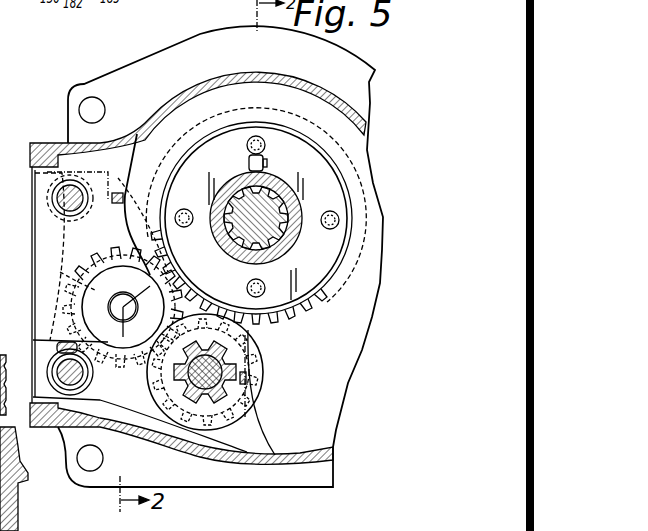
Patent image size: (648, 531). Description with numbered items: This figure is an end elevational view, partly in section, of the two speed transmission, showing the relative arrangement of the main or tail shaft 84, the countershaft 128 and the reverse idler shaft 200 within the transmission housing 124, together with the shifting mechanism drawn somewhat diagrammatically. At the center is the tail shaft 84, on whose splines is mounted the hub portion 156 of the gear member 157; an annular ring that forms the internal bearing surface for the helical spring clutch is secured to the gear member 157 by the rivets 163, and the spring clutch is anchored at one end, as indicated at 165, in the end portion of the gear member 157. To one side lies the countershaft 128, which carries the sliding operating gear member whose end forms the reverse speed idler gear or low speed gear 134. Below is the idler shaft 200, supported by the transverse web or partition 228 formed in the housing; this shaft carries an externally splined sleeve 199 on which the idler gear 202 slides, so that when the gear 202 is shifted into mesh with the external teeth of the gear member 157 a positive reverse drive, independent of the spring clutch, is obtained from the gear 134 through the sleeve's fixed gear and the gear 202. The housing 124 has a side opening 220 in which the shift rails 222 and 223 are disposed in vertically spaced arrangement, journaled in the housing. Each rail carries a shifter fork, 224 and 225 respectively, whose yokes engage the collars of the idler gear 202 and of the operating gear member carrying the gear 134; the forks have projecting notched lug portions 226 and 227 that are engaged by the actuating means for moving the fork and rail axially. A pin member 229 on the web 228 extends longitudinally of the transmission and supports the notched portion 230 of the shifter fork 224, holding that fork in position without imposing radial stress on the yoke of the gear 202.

The tail shaft 84 is at (222, 205).
The transmission housing 124 is at (190, 89).
The countershaft 128 is at (115, 305).
The reverse speed idler gear or low speed gear 134 is at (60, 272).
The hub portion 156 is at (245, 262).
The gear member 157 is at (269, 303).
The rivets 163 is at (247, 146).
The spring clutch anchor 165 is at (268, 162).
The externally splined sleeve 199 is at (247, 380).
The idler shaft 200 is at (222, 394).
The idler gear 202 is at (240, 362).
The side opening 220 is at (36, 170).
The shift rail 222 is at (58, 202).
The shift rail 223 is at (58, 368).
The shifter fork 224 is at (60, 242).
The shifter fork 225 is at (137, 403).
The notched lug portion 226 is at (47, 186).
The notched lug portion 227 is at (58, 346).
The transverse web or partition 228 is at (108, 240).
The pin member 229 is at (130, 197).
The notched portion 230 is at (110, 180).